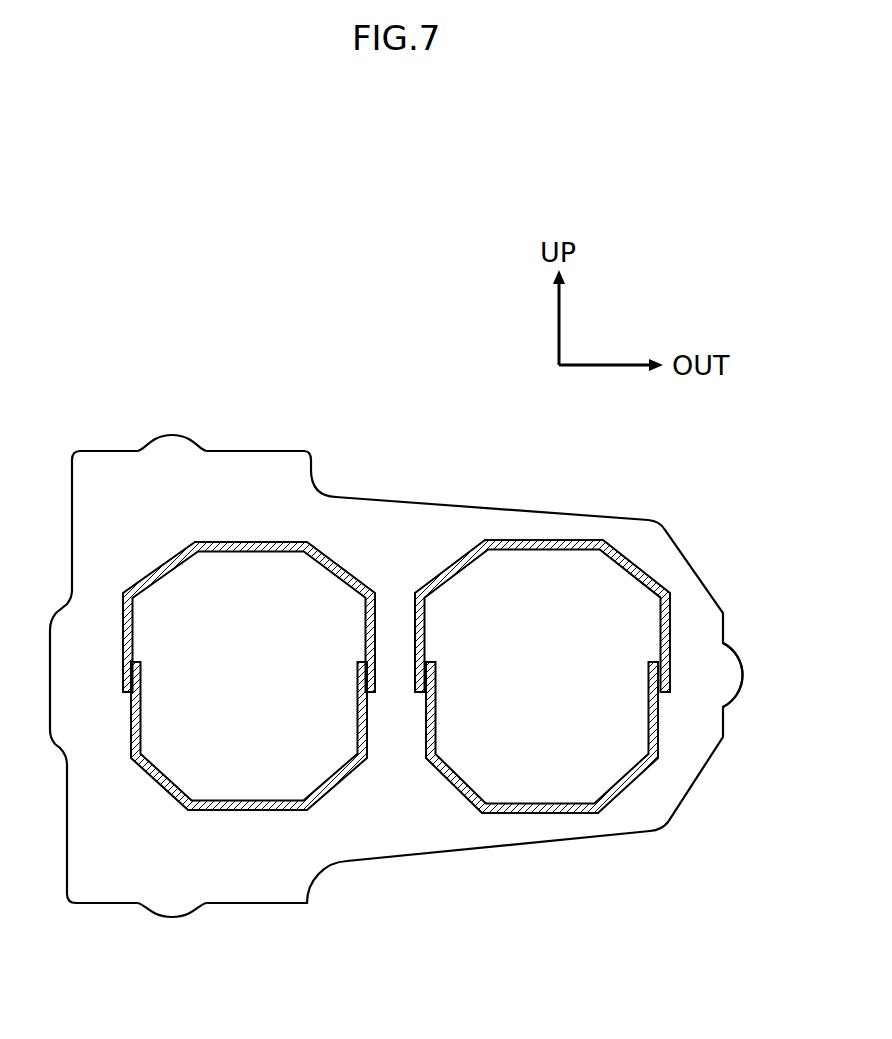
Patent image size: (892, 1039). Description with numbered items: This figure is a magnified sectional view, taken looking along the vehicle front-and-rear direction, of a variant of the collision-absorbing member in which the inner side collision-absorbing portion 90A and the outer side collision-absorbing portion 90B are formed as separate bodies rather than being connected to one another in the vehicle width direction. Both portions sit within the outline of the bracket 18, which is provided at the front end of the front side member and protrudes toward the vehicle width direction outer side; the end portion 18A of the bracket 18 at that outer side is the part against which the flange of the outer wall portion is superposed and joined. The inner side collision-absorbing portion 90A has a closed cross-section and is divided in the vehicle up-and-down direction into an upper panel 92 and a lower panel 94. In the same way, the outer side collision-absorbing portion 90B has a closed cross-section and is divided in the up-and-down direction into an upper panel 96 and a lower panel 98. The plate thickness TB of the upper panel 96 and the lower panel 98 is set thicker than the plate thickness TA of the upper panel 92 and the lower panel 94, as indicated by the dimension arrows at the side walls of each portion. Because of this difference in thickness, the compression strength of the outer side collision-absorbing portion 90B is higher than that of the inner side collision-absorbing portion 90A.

The bracket 18 is at (252, 450).
The end portion of the bracket 18A is at (713, 677).
The inner side collision-absorbing portion 90A is at (249, 635).
The outer side collision-absorbing portion 90B is at (542, 635).
The upper panel 92 is at (267, 553).
The lower panel 94 is at (257, 802).
The upper panel 96 is at (542, 554).
The lower panel 98 is at (542, 802).
The plate thickness TA is at (198, 719).
The plate thickness TB is at (495, 720).